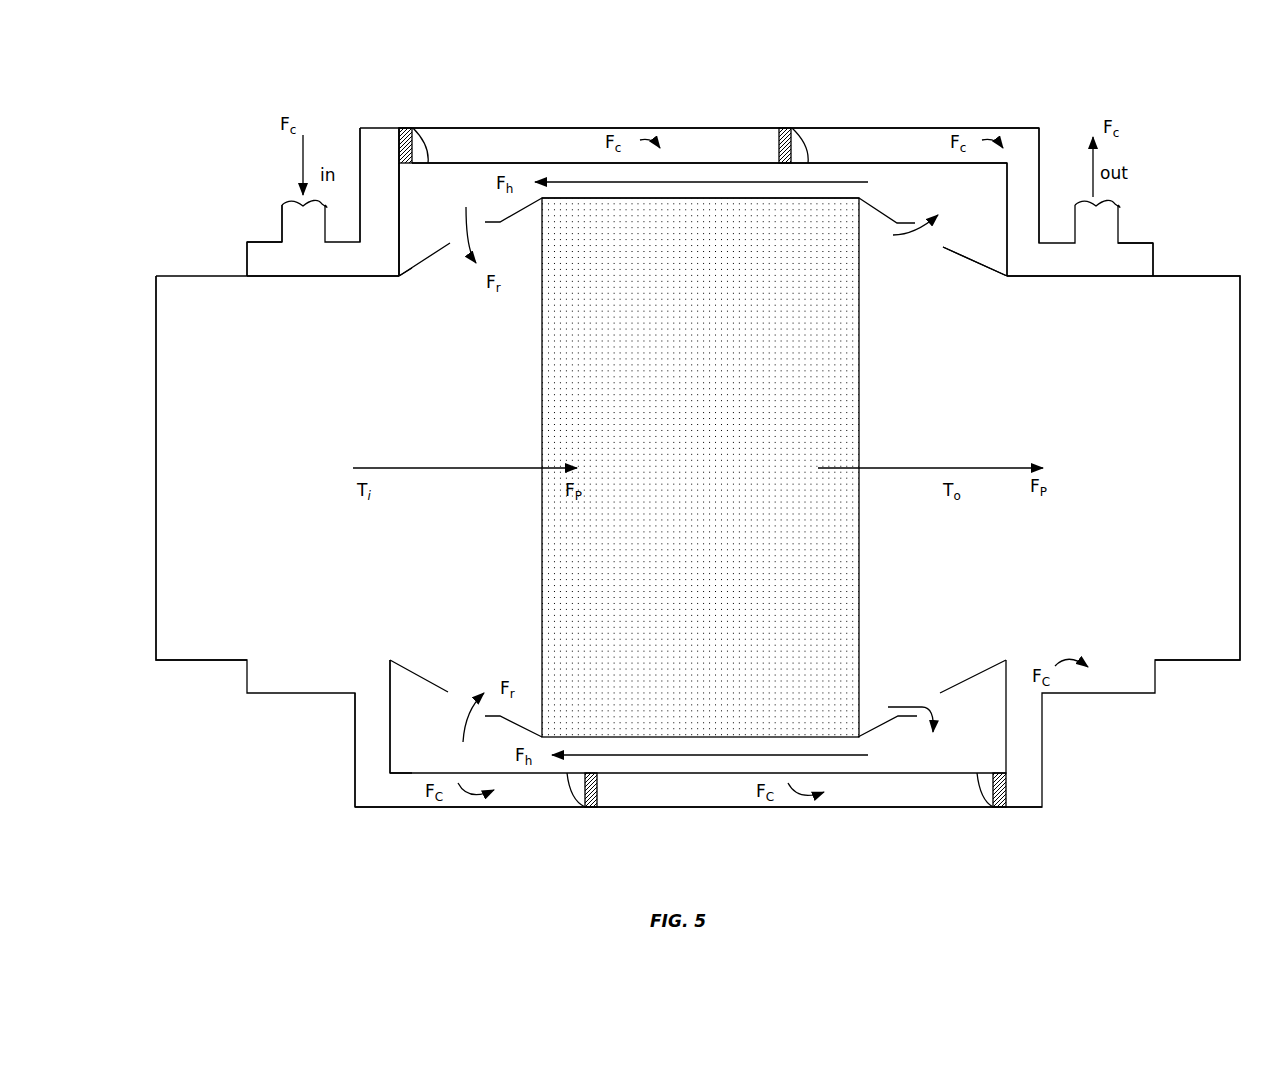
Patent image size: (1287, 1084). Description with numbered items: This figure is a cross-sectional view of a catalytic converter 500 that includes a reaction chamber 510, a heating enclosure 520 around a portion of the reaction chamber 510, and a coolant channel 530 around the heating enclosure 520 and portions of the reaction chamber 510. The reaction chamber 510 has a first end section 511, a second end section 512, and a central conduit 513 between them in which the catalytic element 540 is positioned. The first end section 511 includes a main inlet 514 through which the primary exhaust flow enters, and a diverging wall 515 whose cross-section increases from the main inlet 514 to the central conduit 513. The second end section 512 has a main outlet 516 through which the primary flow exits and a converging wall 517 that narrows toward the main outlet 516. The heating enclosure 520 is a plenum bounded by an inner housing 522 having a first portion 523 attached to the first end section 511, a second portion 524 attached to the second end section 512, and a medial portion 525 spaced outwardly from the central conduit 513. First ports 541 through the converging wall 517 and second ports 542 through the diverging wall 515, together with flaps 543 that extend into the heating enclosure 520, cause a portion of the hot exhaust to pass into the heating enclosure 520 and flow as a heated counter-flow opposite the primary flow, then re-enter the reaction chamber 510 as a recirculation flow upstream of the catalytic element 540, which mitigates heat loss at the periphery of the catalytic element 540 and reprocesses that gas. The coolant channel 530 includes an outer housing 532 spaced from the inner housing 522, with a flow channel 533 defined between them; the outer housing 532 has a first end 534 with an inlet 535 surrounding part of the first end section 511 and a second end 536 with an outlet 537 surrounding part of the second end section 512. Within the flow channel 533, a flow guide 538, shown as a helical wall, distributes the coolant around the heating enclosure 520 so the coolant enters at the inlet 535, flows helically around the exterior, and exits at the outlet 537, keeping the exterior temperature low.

The catalytic converter 500 is at (1158, 120).
The reaction chamber 510 is at (303, 336).
The first end section 511 is at (378, 276).
The second end section 512 is at (1013, 276).
The central conduit 513 is at (727, 198).
The main inlet 514 is at (218, 276).
The diverging wall 515 is at (403, 273).
The main outlet 516 is at (1217, 276).
The converging wall 517 is at (963, 262).
The heating enclosure 520 is at (466, 182).
The inner housing 522 is at (1007, 163).
The first portion 523 is at (400, 186).
The second portion 524 is at (1000, 190).
The medial portion 525 is at (868, 172).
The coolant channel 530 is at (375, 135).
The outer housing 532 is at (538, 128).
The flow channel 533 is at (298, 262).
The first end 534 is at (247, 242).
The inlet 535 is at (283, 203).
The second end 536 is at (1147, 242).
The outlet 537 is at (1118, 213).
The flow guide 538 is at (400, 127).
The catalytic element 540 is at (562, 392).
The first ports 541 is at (943, 247).
The second ports 542 is at (450, 243).
The flaps 543 is at (493, 223).